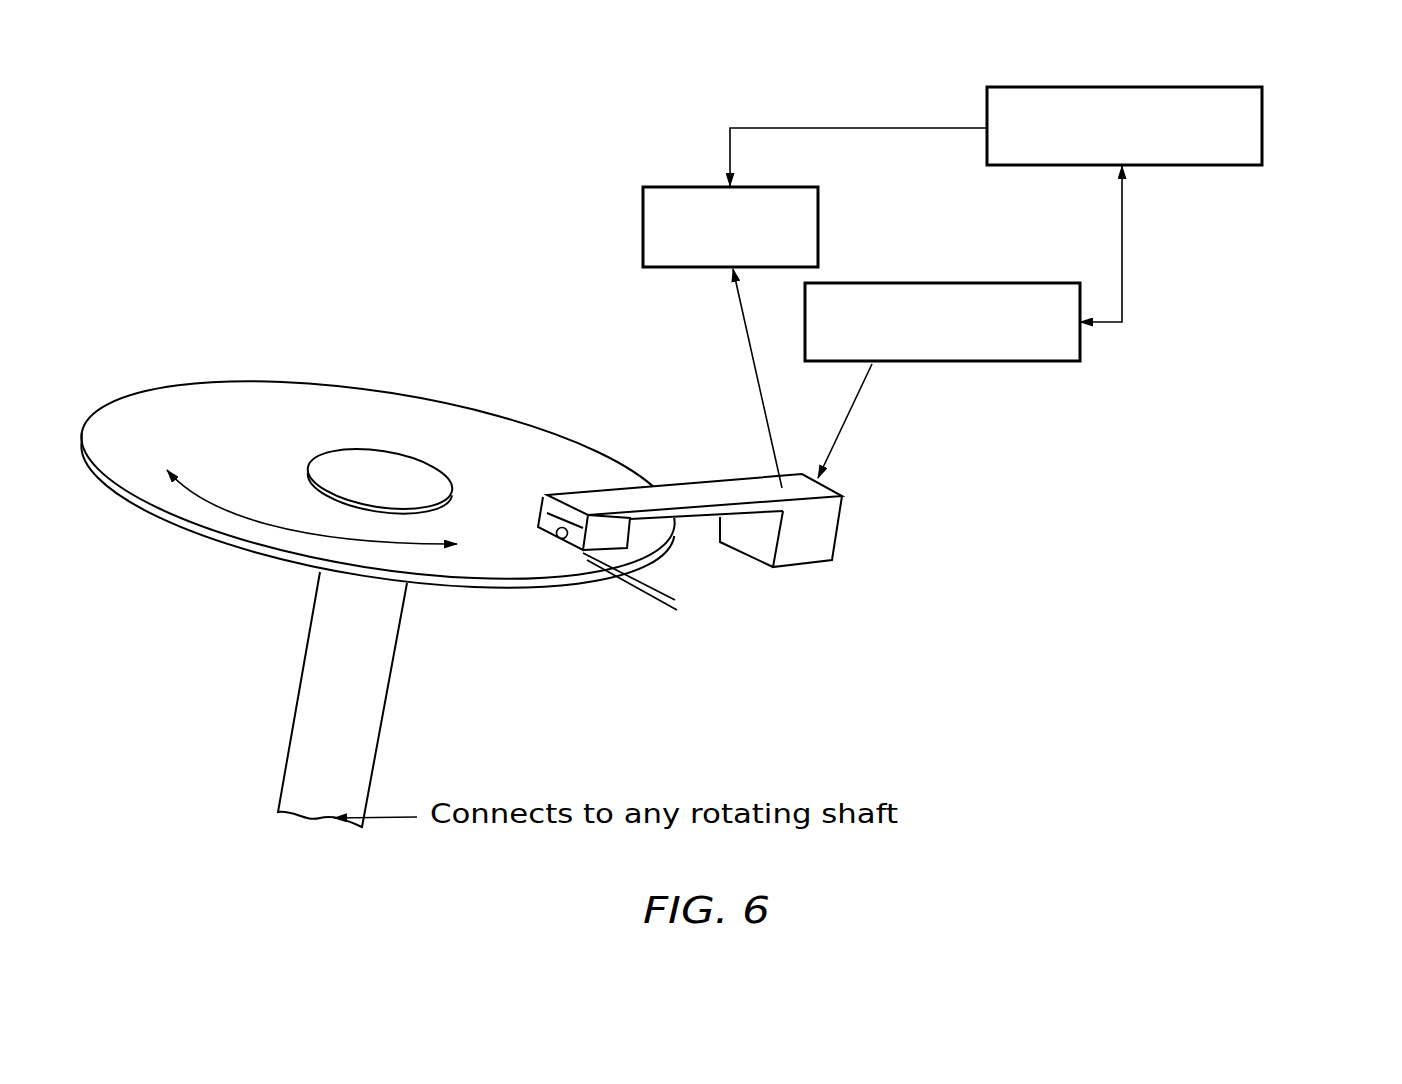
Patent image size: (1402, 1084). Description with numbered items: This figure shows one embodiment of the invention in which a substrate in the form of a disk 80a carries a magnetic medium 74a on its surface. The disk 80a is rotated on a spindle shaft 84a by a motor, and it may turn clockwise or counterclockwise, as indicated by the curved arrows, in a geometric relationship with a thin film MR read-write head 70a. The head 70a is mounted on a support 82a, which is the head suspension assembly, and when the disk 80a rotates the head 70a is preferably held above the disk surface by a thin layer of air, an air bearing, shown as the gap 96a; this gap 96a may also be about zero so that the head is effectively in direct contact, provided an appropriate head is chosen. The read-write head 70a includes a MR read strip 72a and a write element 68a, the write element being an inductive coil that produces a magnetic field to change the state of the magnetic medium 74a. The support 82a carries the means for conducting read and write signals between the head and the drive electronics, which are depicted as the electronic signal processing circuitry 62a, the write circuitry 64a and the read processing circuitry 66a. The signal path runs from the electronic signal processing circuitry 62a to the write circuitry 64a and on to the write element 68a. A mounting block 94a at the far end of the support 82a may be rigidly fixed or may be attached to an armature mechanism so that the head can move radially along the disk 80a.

The electronic signal processing circuitry 62a is at (1263, 121).
The write circuitry 64a is at (1045, 361).
The read processing circuitry 66a is at (643, 208).
The write element 68a is at (547, 503).
The thin film MR read-write head 70a is at (620, 533).
The MR read strip 72a is at (562, 524).
The magnetic medium 74a is at (377, 417).
The disk 80a is at (260, 548).
The support 82a is at (710, 493).
The spindle shaft 84a is at (376, 752).
The mounting block 94a is at (813, 550).
The gap 96a is at (677, 560).